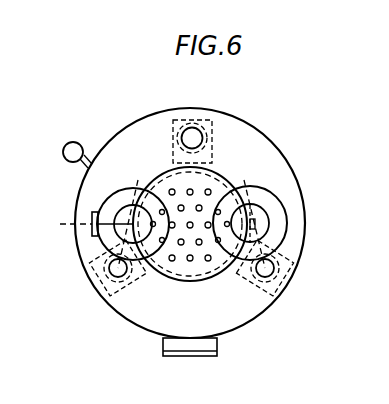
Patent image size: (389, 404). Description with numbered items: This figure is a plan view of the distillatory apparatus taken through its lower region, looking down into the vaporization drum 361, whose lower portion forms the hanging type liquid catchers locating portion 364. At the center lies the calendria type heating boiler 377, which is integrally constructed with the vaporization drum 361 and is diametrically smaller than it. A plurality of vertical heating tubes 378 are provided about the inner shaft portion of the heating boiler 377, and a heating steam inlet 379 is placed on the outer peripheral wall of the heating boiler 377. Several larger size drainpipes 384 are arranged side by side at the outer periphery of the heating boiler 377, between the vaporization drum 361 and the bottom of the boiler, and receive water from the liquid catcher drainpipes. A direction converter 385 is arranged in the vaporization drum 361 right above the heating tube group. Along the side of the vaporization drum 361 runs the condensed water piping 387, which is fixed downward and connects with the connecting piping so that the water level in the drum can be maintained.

The vaporization drum 361 is at (296, 172).
The hanging type liquid catchers locating portion 364 is at (285, 227).
The calendria type heating boiler 377 is at (227, 177).
The vertical heating tubes 378 is at (140, 272).
The heating steam inlet 379 is at (63, 233).
The drainpipes 384 is at (272, 282).
The direction converter 385 is at (206, 276).
The condensed water piping 387 is at (82, 142).